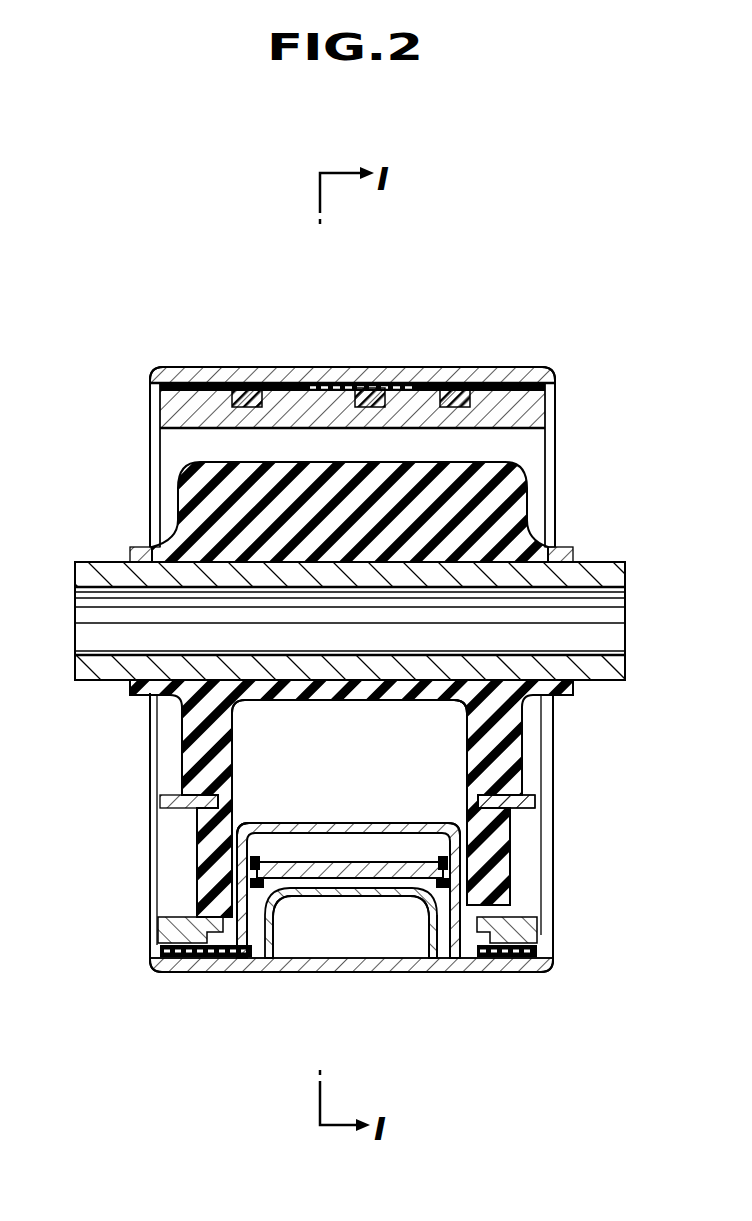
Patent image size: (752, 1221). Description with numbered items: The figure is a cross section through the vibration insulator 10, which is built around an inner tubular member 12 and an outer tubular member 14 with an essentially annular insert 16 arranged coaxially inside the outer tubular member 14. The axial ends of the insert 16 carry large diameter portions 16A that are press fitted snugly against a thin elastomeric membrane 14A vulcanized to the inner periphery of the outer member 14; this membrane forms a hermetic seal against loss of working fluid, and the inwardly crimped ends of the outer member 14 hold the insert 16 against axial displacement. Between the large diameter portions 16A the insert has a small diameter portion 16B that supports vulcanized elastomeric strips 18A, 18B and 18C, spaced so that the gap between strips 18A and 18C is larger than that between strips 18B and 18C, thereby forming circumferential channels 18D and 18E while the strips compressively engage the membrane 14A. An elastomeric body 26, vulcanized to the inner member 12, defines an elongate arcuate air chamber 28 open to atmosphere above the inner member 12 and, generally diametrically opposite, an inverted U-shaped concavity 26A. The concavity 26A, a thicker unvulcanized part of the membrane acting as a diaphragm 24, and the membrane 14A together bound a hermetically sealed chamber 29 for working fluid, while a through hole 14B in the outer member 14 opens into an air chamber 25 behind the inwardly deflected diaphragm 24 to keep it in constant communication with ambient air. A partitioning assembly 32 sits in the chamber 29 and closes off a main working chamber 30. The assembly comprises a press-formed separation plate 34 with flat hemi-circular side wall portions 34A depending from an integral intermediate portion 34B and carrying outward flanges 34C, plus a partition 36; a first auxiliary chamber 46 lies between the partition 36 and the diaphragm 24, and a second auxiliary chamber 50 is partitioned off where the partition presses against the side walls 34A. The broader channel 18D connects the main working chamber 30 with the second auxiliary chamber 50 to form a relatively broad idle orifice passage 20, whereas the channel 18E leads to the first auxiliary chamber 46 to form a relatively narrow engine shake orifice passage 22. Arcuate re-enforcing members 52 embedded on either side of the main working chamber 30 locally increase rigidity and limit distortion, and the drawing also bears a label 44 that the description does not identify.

The vibration insulator 10 is at (531, 270).
The inner tubular member 12 is at (600, 562).
The outer tubular member 14 is at (540, 375).
The elastomeric membrane 14A is at (401, 386).
The through hole 14B is at (343, 960).
The annular insert 16 is at (520, 432).
The large diameter portions 16A is at (173, 400).
The small diameter portion 16B is at (334, 396).
The elastomeric strip 18A is at (237, 392).
The elastomeric strip 18B is at (480, 389).
The elastomeric strip 18C is at (378, 392).
The channel 18D is at (272, 392).
The channel 18E is at (452, 392).
The idle orifice passage 20 is at (296, 392).
The engine shake orifice passage 22 is at (430, 392).
The diaphragm 24 is at (401, 905).
The air chamber 25 is at (300, 938).
The elastomeric body 26 is at (512, 748).
The inverted U-shaped concavity 26A is at (433, 703).
The air chamber 28 is at (180, 450).
The hermetically sealed chamber 29 is at (500, 800).
The main working chamber 30 is at (358, 749).
The partitioning assembly 32 is at (444, 812).
The separation plate 34 is at (412, 822).
The side wall portions 34A is at (258, 895).
The intermediate portion 34B is at (276, 822).
The flange 34C is at (480, 947).
The partition 36 is at (272, 957).
The disc 44 is at (373, 862).
The first auxiliary chamber 46 is at (446, 955).
The second auxiliary chamber 50 is at (315, 850).
The re-enforcing members 52 is at (533, 805).